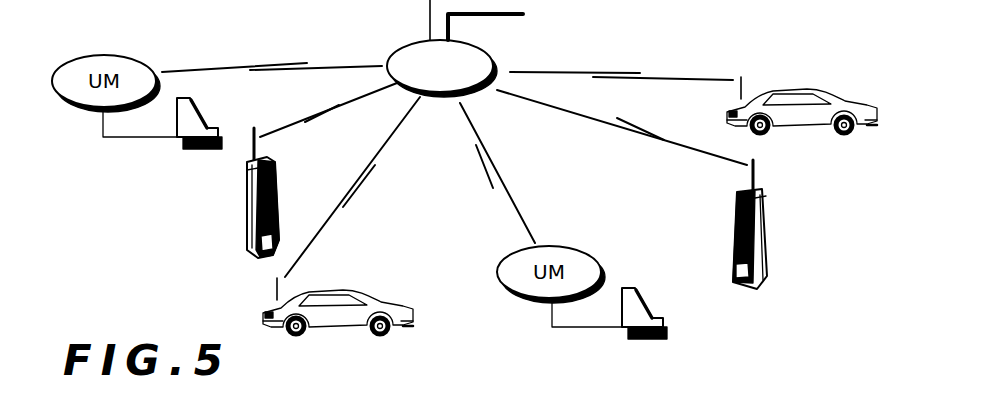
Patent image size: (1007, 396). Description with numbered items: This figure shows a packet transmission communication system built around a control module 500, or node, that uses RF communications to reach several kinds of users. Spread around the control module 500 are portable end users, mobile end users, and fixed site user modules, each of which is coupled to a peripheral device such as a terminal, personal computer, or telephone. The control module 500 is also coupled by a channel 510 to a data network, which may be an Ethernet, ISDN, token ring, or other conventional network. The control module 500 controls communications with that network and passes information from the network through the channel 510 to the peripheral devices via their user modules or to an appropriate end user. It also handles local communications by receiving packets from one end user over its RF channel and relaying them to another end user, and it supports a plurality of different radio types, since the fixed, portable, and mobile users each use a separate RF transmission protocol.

The control module 500 is at (392, 48).
The channel 510 is at (502, 17).